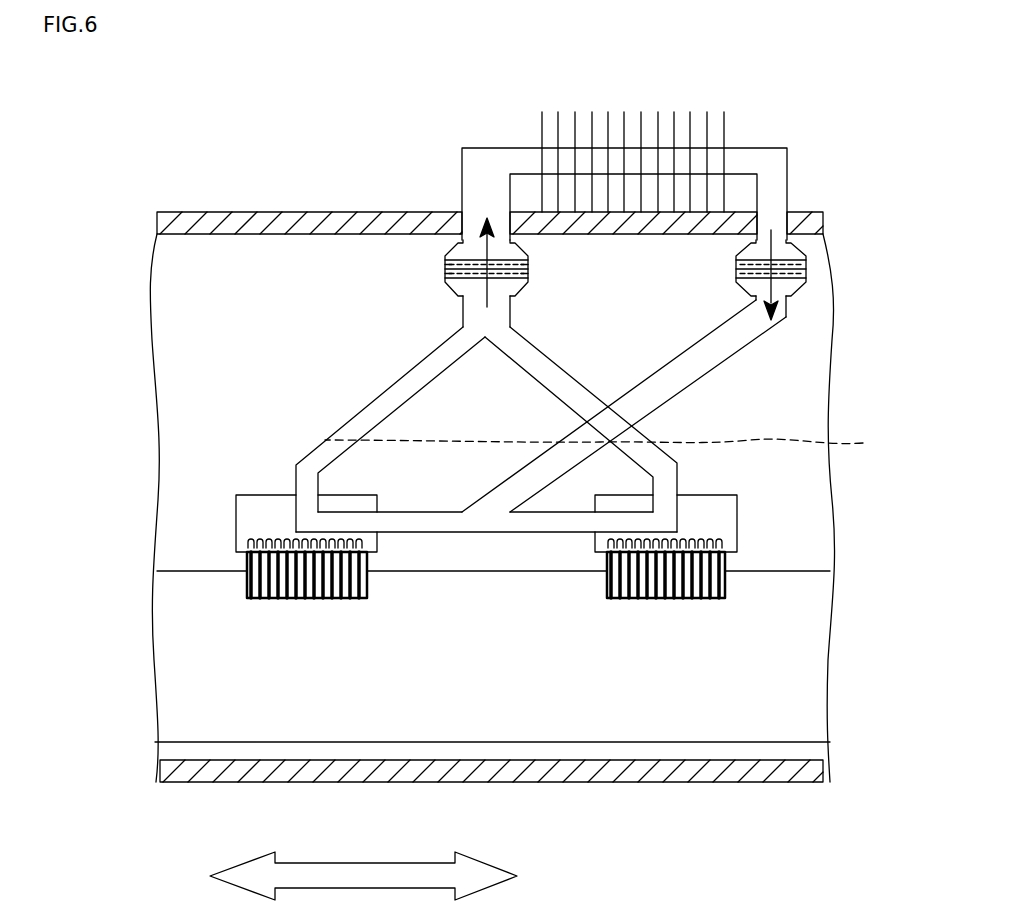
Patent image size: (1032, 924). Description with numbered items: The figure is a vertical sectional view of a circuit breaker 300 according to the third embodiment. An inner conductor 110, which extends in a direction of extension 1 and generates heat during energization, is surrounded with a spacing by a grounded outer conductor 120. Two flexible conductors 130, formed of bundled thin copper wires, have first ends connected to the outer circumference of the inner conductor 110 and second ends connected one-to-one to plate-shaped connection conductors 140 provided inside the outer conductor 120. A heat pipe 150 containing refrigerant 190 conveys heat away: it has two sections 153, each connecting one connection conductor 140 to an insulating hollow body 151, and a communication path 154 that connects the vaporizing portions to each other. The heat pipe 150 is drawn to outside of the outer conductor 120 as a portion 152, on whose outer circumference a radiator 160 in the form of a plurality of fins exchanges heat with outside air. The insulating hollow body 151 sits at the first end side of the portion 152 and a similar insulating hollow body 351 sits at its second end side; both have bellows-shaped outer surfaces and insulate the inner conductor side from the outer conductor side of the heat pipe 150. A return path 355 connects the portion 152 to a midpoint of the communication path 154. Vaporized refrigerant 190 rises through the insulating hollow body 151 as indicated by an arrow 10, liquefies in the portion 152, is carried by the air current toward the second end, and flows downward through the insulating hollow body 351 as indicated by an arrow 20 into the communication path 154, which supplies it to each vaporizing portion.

The direction of extension 1 is at (507, 873).
The arrow 10 is at (463, 302).
The arrow 20 is at (790, 250).
The inner conductor 110 is at (790, 660).
The outer conductor 120 is at (300, 212).
The flexible conductor 130 is at (725, 583).
The connection conductor 140 is at (737, 520).
The heat pipe 150 is at (762, 147).
The insulating hollow body 151 is at (447, 260).
The portion drawn to outside of outer conductor 152 is at (483, 146).
The section 153 is at (380, 393).
The communication path 154 is at (545, 533).
The radiator 160 is at (541, 122).
The refrigerant 190 is at (615, 445).
The circuit breaker 300 is at (832, 95).
The insulating hollow body 351 is at (800, 268).
The return path 355 is at (788, 312).